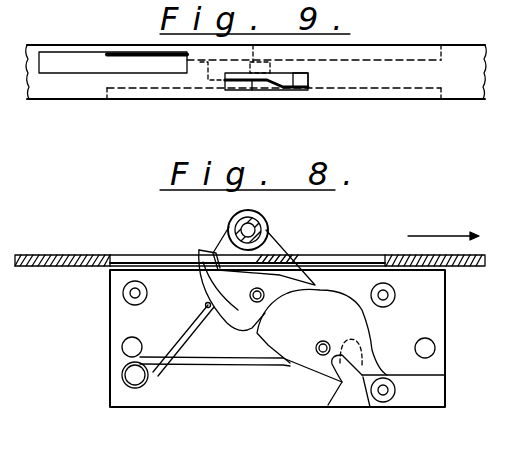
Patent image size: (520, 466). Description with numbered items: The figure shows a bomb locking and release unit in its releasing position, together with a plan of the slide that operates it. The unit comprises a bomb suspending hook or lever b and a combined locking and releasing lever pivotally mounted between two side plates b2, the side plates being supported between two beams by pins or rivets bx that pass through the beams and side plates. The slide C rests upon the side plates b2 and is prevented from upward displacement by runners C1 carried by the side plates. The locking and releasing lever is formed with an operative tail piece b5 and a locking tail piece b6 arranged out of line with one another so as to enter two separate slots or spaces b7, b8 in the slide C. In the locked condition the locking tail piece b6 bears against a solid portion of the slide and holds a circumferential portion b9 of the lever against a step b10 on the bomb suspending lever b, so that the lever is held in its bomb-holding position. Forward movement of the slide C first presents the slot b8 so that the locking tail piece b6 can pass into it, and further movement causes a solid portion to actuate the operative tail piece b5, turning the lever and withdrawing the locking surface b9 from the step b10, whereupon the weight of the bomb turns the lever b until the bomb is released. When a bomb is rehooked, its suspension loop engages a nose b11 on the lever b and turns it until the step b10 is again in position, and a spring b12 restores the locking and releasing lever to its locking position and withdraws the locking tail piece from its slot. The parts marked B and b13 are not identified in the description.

In FIG. 8, the slide C is at (60, 250).
In FIG. 9, the slide C is at (473, 63).
In FIG. 8, the runners C1 is at (264, 242).
In FIG. 8, the bolt / base plate B is at (277, 338).
In FIG. 9, the bolt / base plate B is at (378, 78).
In FIG. 8, the bomb suspending hook or lever b is at (351, 348).
In FIG. 8, the side plates b2 is at (110, 322).
In FIG. 9, the side plates b2 is at (420, 97).
In FIG. 8, the operative tail piece b5 is at (316, 281).
In FIG. 9, the operative tail piece b5 is at (303, 83).
In FIG. 8, the locking tail piece b6 is at (207, 256).
In FIG. 9, the locking tail piece b6 is at (200, 68).
In FIG. 9, the slot or space b7 is at (240, 78).
In FIG. 9, the slot or space b8 is at (72, 62).
In FIG. 8, the circumferential portion b9 is at (241, 353).
In FIG. 8, the step b10 is at (293, 327).
In FIG. 8, the nose b11 is at (457, 375).
In FIG. 8, the spring b12 is at (177, 357).
In FIG. 8, the screw b13 is at (133, 313).
In FIG. 8, the pins or rivets bx is at (460, 327).